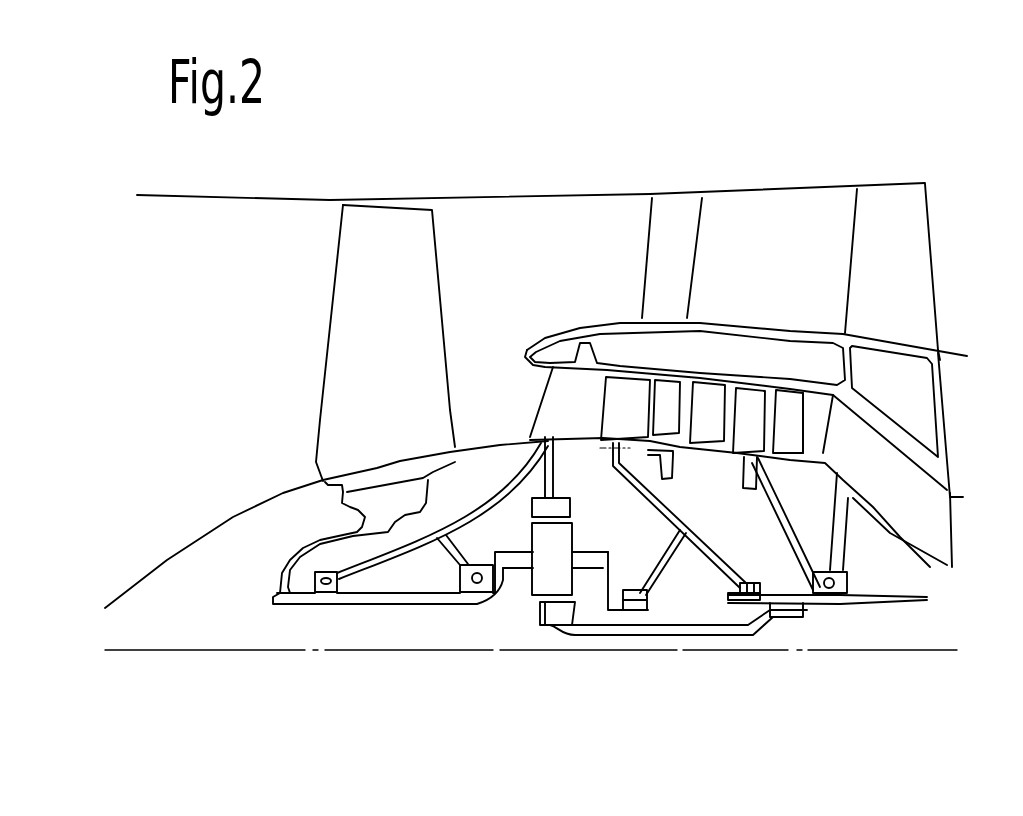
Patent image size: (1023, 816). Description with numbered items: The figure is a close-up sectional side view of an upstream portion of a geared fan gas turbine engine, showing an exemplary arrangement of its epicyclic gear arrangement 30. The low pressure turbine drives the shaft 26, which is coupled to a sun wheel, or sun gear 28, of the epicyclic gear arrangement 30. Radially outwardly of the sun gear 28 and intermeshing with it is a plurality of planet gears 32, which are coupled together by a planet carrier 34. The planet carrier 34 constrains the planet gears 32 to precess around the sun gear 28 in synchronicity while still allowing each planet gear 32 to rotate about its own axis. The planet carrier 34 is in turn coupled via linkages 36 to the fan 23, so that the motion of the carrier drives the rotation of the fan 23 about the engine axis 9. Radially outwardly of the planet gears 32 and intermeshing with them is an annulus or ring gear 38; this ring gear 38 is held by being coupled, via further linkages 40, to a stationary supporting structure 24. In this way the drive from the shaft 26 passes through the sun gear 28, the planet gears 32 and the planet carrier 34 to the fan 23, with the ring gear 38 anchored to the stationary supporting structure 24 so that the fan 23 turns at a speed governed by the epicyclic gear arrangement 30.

The engine axis 9 is at (283, 652).
The fan 23 is at (353, 382).
The stationary supporting structure 24 is at (565, 403).
The shaft 26 is at (815, 607).
The sun gear 28 is at (556, 619).
The epicyclic gear arrangement 30 is at (508, 597).
The planet gears 32 is at (532, 590).
The planet carrier 34 is at (606, 585).
The linkages 36 is at (483, 607).
The ring gear 38 is at (533, 510).
The linkages 40 is at (555, 470).